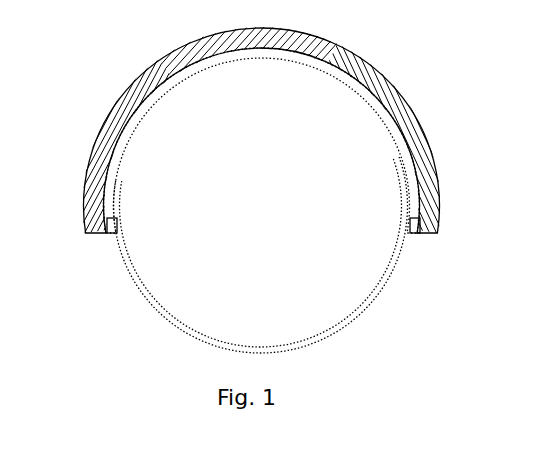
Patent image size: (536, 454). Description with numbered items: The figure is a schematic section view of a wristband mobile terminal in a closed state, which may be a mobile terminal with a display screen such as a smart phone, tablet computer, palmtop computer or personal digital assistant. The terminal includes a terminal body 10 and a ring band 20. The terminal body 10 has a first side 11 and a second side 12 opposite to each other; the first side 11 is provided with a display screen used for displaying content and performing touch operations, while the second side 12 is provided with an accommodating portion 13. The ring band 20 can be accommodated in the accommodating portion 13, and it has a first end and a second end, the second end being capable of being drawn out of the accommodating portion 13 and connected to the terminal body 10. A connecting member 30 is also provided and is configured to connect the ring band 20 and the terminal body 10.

The terminal body 10 is at (260, 144).
The first side 11 is at (148, 70).
The second side 12 is at (117, 163).
The accommodating portion 13 is at (208, 56).
The ring band 20 is at (155, 310).
The connecting member 30 is at (105, 218).